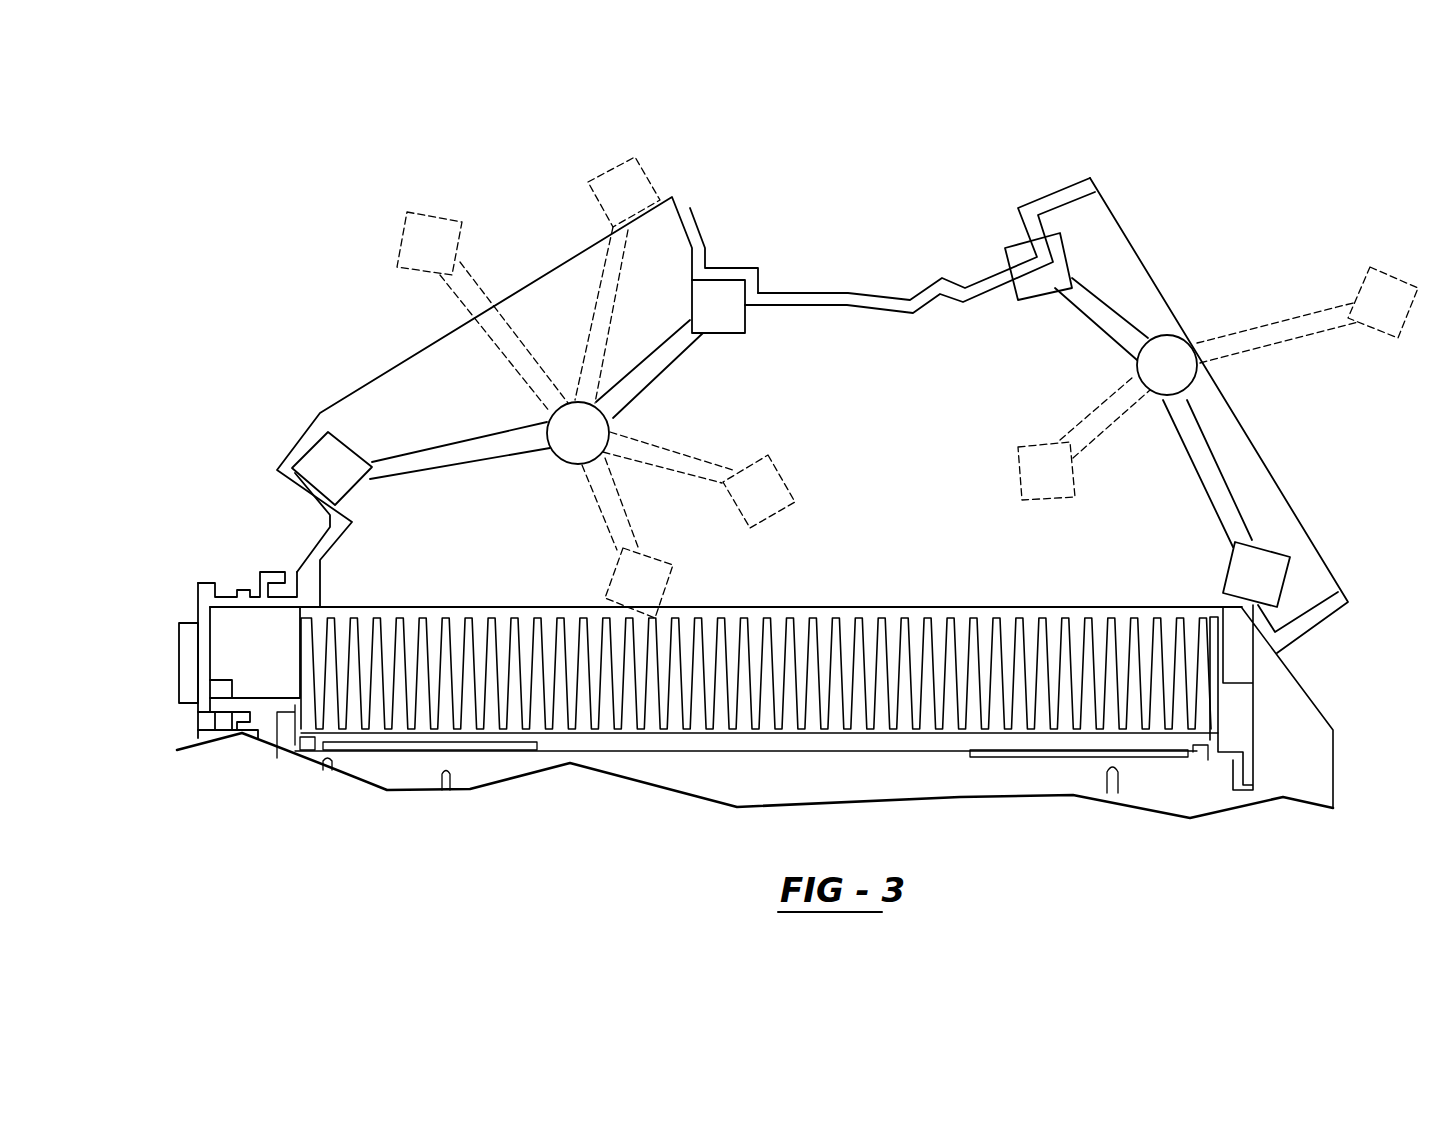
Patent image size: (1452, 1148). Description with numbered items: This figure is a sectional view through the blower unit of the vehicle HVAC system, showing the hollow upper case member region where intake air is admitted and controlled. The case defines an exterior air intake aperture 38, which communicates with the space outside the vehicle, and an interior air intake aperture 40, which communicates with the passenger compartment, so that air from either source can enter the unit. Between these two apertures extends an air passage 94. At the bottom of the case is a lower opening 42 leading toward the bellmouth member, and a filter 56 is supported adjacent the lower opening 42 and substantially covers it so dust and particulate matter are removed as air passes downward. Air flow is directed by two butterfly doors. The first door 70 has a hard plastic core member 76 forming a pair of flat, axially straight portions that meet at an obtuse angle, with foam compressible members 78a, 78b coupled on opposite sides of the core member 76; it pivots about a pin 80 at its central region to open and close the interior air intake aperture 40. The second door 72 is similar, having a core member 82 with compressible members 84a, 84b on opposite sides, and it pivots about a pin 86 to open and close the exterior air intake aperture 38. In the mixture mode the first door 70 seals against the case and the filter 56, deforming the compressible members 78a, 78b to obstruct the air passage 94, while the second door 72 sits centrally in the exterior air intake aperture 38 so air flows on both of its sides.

The exterior air intake aperture 38 is at (1222, 260).
The interior air intake aperture 40 is at (488, 183).
The lower opening 42 is at (368, 768).
The filter 56 is at (452, 682).
The first door 70 is at (427, 377).
The second door 72 is at (1280, 440).
The core member 76 is at (653, 365).
The compressible member 78a is at (722, 300).
The compressible member 78b is at (320, 477).
The pin 80 is at (567, 452).
The core member 82 is at (1217, 497).
The compressible member 84a is at (1033, 290).
The compressible member 84b is at (1260, 572).
The pin 86 is at (1150, 367).
The air passage 94 is at (860, 373).